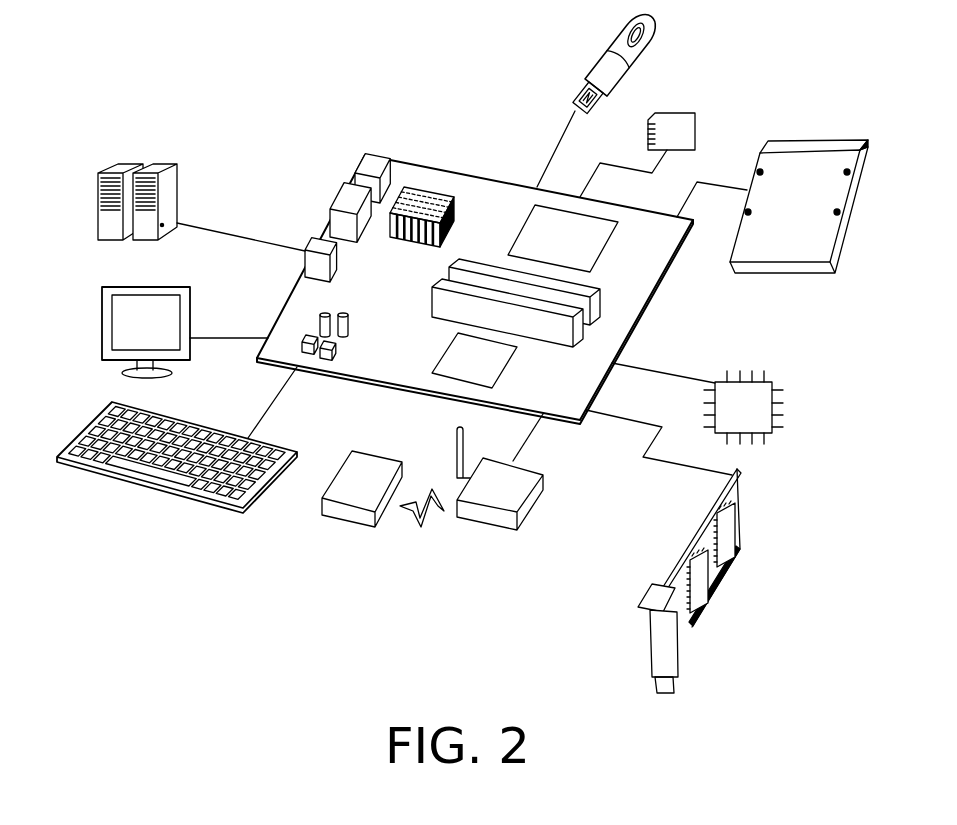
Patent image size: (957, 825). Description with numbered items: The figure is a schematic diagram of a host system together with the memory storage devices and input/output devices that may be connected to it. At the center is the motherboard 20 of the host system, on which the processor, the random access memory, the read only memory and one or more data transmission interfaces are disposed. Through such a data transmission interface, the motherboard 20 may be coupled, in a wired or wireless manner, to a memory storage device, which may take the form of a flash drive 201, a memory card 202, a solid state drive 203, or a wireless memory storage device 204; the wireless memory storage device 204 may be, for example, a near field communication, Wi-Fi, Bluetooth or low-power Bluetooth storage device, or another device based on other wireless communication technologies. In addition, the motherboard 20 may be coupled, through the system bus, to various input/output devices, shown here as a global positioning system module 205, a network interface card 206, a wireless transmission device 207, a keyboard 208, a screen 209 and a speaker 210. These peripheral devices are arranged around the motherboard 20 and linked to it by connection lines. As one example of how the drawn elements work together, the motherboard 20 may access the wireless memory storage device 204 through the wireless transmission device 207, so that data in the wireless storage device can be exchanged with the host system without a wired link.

The motherboard 20 is at (477, 197).
The flash drive 201 is at (599, 50).
The memory card 202 is at (697, 121).
The solid state drive 203 is at (817, 136).
The wireless memory storage device 204 is at (338, 465).
The global positioning system module 205 is at (778, 408).
The network interface card 206 is at (742, 527).
The wireless transmission device 207 is at (533, 510).
The keyboard 208 is at (180, 493).
The screen 209 is at (102, 340).
The speaker 210 is at (97, 228).